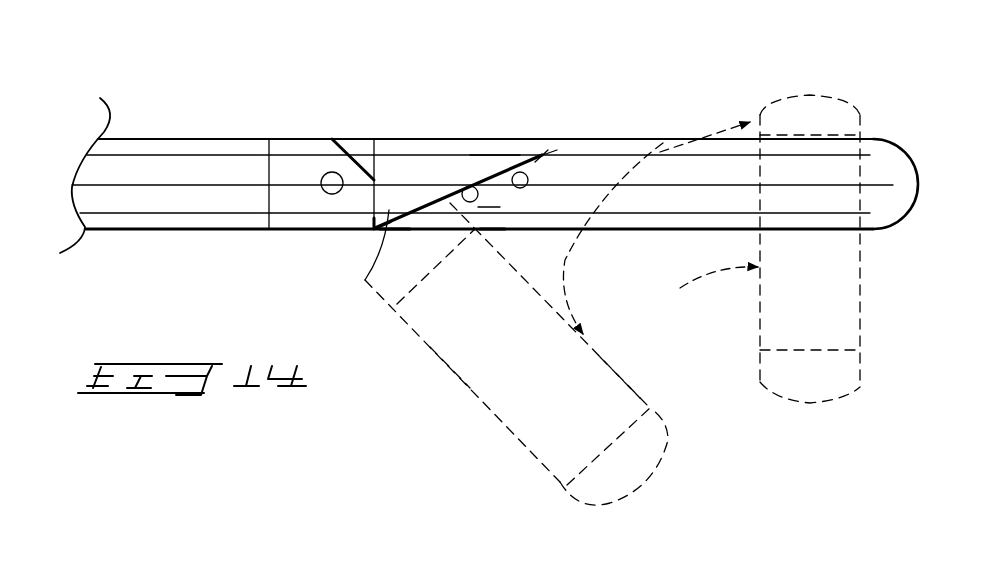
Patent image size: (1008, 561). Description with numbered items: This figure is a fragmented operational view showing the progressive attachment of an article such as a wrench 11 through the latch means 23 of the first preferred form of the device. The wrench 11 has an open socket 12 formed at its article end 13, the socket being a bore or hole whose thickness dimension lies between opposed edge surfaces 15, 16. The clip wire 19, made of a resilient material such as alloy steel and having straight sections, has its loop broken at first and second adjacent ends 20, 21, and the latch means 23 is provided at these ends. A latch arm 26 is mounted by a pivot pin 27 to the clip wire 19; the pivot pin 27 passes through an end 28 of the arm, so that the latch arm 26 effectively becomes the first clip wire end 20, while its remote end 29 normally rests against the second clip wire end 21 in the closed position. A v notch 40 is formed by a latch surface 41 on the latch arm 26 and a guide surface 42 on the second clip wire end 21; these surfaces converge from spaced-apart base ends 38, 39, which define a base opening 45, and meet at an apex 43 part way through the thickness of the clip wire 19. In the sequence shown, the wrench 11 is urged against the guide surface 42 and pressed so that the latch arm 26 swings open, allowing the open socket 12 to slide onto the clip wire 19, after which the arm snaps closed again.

The wrench 11 is at (592, 313).
The open socket 12 is at (515, 400).
The article end 13 is at (823, 112).
The edge surface 15 is at (455, 378).
The edge surface 16 is at (632, 384).
The clip wire 19 is at (192, 139).
The first clip wire end 20 is at (298, 152).
The second clip wire end 21 is at (557, 150).
The latch means 23 is at (423, 139).
The latch arm 26 is at (492, 153).
The pivot pin 27 is at (327, 193).
The end of the arm 28 is at (362, 150).
The remote end of latch arm 29 is at (548, 150).
The base end 38 is at (380, 226).
The base end 39 is at (493, 232).
The v notch 40 is at (485, 210).
The latch surface 41 is at (467, 186).
The guide surface 42 is at (528, 184).
The apex 43 is at (557, 150).
The base opening 45 is at (412, 214).